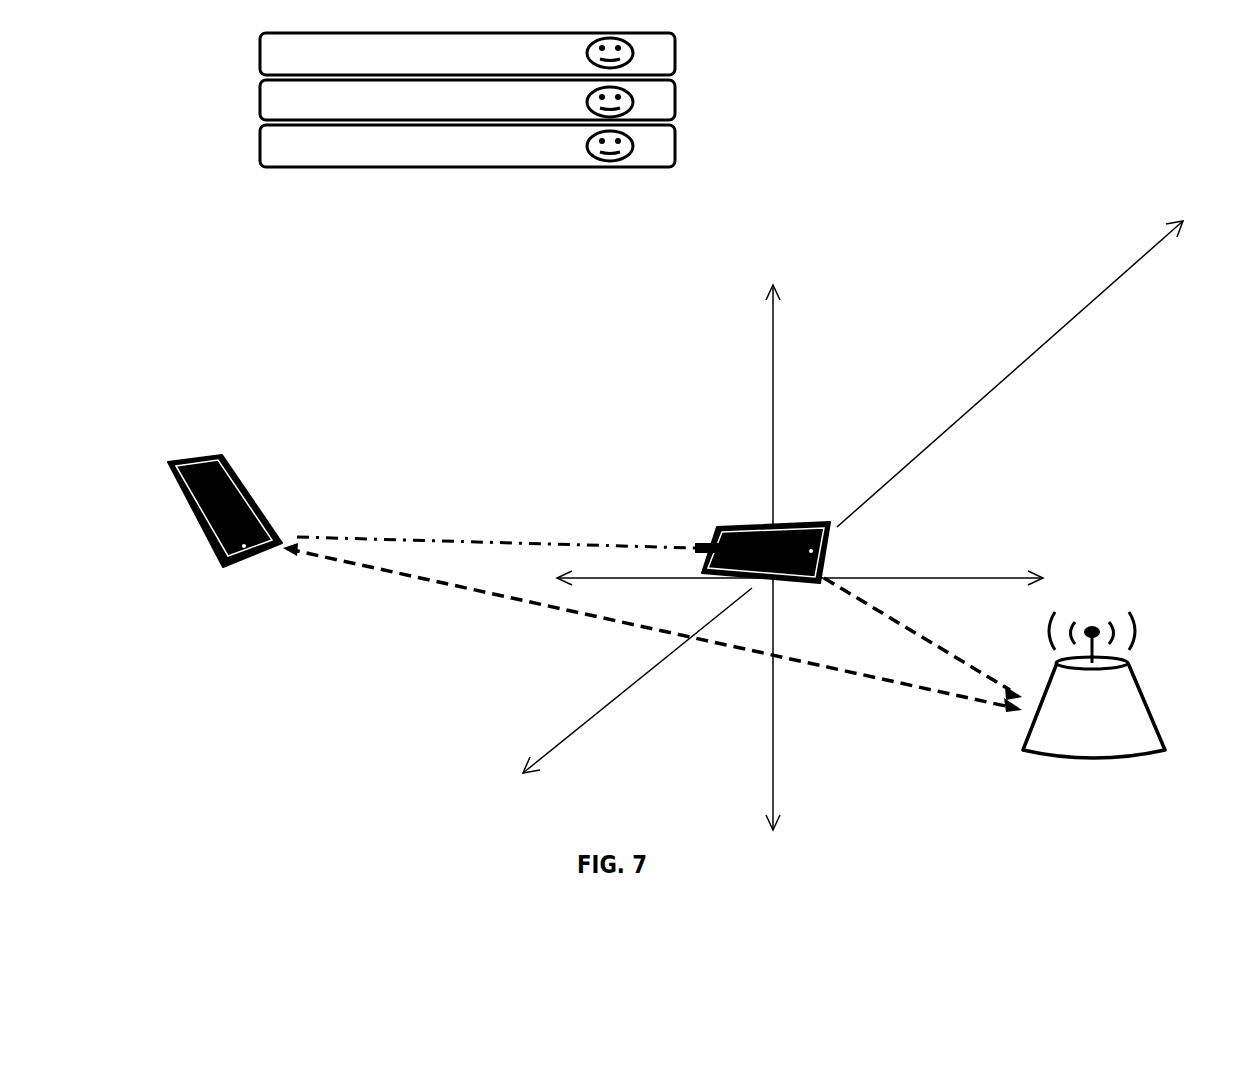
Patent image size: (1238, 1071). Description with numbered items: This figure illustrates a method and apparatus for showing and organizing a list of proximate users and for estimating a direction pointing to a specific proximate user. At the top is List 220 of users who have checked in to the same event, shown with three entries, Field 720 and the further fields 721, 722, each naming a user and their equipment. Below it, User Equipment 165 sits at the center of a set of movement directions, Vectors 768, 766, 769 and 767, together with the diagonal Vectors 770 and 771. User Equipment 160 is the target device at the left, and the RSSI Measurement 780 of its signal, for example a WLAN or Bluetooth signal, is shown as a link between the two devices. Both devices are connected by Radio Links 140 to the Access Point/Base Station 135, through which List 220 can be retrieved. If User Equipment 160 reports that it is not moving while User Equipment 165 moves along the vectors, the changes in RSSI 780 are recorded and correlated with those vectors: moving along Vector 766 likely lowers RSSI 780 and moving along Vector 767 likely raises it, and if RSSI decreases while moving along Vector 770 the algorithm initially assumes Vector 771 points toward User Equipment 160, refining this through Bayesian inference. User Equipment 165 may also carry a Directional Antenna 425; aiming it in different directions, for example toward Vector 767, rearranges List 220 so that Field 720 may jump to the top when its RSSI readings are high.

The list 220 is at (405, 152).
The field 720 is at (258, 44).
The second contact entry 721 is at (258, 98).
The third contact entry 722 is at (258, 143).
The user equipment 160 is at (222, 450).
The user equipment 165 is at (818, 515).
The directional antenna 425 is at (705, 543).
The RSSI measurement 780 is at (522, 537).
The radio link 140 is at (870, 613).
The access point/base station 135 is at (1094, 700).
The vector 766 is at (903, 578).
The vector 767 is at (650, 580).
The vector 768 is at (773, 340).
The vector 769 is at (772, 732).
The vector 770 is at (1030, 358).
The vector 771 is at (653, 667).